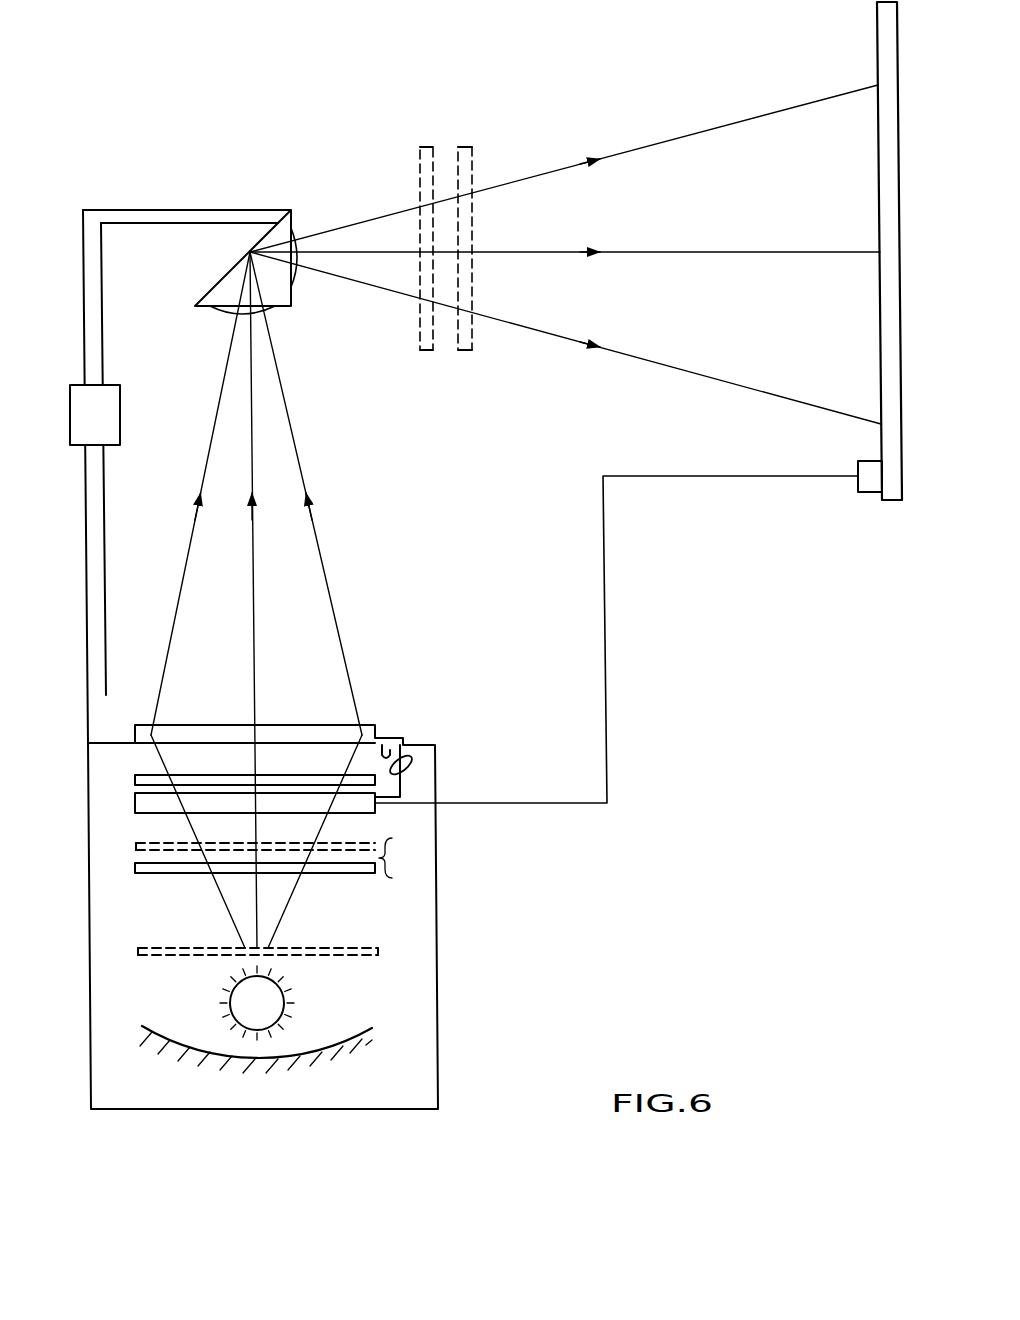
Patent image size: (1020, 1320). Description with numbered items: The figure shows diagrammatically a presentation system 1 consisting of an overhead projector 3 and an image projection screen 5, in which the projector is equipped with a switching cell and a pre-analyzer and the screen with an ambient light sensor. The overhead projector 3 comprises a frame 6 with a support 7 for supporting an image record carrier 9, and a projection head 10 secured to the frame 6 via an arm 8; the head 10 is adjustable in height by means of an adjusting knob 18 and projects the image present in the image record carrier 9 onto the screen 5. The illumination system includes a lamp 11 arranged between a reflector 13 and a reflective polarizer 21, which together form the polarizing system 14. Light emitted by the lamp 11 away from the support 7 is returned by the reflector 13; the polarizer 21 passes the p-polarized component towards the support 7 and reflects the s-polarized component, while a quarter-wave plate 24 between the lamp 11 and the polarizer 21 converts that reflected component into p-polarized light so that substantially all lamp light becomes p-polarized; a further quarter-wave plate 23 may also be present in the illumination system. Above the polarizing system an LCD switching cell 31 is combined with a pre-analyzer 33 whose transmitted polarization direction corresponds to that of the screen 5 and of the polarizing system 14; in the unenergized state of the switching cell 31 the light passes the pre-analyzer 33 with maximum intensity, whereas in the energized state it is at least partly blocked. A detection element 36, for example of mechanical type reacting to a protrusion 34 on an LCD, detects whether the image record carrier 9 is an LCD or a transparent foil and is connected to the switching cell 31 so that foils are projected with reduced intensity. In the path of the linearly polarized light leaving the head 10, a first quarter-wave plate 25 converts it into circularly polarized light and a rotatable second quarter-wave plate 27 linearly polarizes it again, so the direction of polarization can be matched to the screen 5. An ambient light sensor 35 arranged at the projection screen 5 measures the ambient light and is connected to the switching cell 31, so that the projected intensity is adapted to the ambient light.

The presentation system 1 is at (652, 759).
The overhead projector 3 is at (108, 1126).
The image projection screen 5 is at (884, 18).
The frame 6 is at (438, 940).
The support 7 is at (412, 742).
The arm 8 is at (100, 519).
The image record carrier 9 is at (360, 737).
The projection head 10 is at (280, 228).
The lamp 11 is at (268, 998).
The reflector 13 is at (368, 1030).
The polarizing system 14 is at (393, 857).
The adjusting knob 18 is at (115, 418).
The reflective polarizer 21 is at (372, 877).
The λ/4 plate 23 is at (136, 846).
The λ/4 plate 24 is at (380, 952).
The first λ/4 plate 25 is at (426, 146).
The second λ/4 plate 27 is at (470, 148).
The LCD switching cell 31 is at (135, 806).
The pre-analyzer 33 is at (135, 779).
The protrusion 34 is at (392, 745).
The ambient light sensor 35 is at (871, 480).
The detection element 36 is at (410, 768).